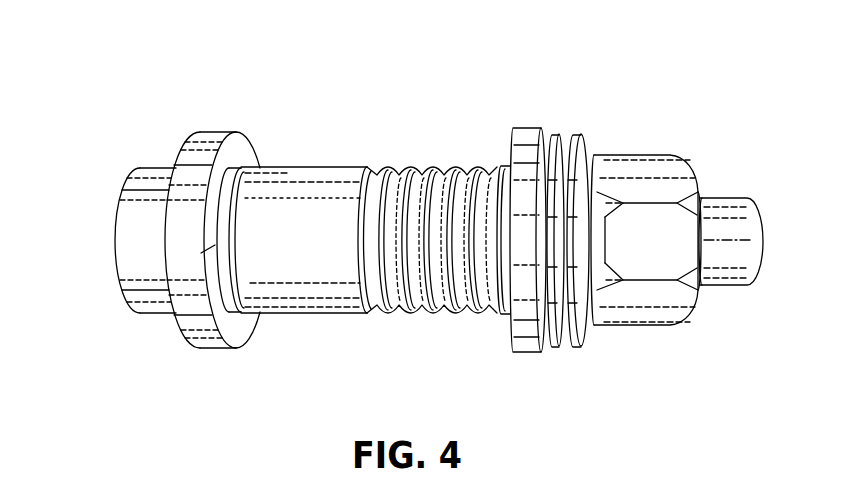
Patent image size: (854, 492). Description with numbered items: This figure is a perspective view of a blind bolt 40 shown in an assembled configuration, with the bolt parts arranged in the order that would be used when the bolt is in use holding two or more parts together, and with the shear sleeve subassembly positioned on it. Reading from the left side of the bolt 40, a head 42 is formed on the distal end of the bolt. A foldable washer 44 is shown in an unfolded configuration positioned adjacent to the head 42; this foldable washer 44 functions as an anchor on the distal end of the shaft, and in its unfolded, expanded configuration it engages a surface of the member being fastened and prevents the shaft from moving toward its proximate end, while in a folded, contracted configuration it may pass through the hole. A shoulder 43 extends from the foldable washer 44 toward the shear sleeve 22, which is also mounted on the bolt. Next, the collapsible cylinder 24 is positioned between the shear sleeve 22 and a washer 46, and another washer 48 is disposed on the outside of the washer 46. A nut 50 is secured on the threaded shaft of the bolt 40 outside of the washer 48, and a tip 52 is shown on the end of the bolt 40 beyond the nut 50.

The blind bolt 40 is at (386, 40).
The shear sleeve 22 is at (300, 166).
The collapsible cylinder 24 is at (436, 170).
The head 42 is at (128, 223).
The shoulder 43 is at (248, 337).
The foldable washer 44 is at (212, 131).
The washer 46 is at (517, 352).
The washer 48 is at (556, 134).
The nut 50 is at (644, 156).
The tip 52 is at (730, 199).